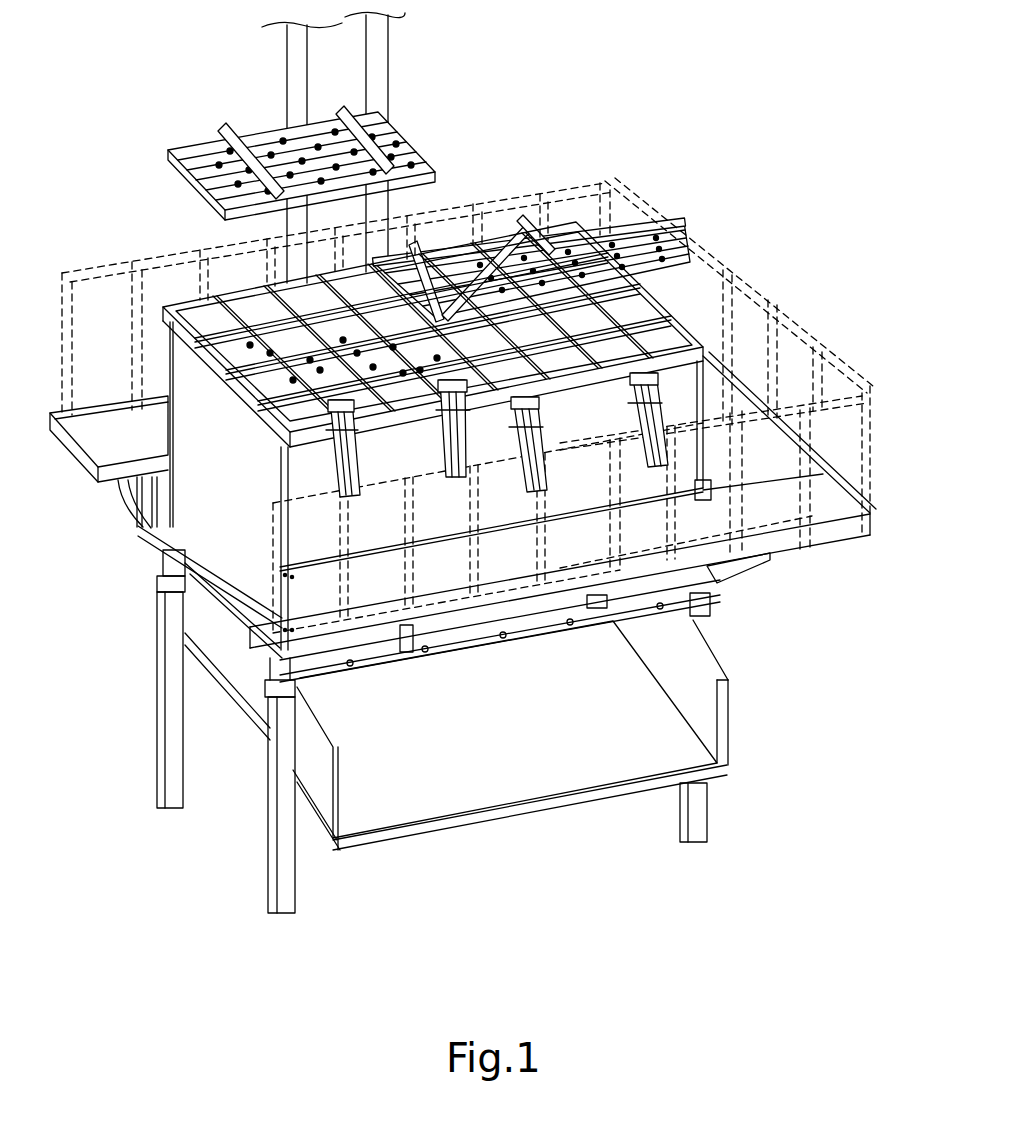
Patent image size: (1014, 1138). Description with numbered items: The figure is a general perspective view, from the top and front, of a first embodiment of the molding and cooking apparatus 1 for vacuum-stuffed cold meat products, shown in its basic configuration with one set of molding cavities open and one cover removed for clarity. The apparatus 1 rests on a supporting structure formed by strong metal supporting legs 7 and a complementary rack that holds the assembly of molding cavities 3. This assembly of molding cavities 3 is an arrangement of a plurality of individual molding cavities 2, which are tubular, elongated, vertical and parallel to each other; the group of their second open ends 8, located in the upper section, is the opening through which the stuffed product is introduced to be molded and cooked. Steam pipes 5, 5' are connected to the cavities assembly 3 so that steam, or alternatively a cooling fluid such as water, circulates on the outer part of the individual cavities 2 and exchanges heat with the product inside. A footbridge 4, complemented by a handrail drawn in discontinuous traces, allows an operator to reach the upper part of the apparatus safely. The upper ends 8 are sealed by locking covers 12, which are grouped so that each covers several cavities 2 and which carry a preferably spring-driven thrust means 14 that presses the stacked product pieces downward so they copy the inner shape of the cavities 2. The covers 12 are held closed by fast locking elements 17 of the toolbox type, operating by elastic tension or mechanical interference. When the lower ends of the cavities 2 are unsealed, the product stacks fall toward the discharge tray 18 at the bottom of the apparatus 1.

The molding and cooking apparatus 1 is at (524, 128).
The molding cavity 2 is at (682, 272).
The assembly of molding cavities 3 is at (181, 503).
The footbridge 4 is at (137, 444).
The steam pipe 5 is at (302, 152).
The steam pipe 5' is at (385, 142).
The supporting legs 7 is at (183, 790).
The second open end 8 is at (705, 284).
The locking cover 12 is at (188, 136).
The thrust means 14 is at (373, 107).
The fast locking element 17 is at (660, 395).
The discharge tray 18 is at (660, 761).